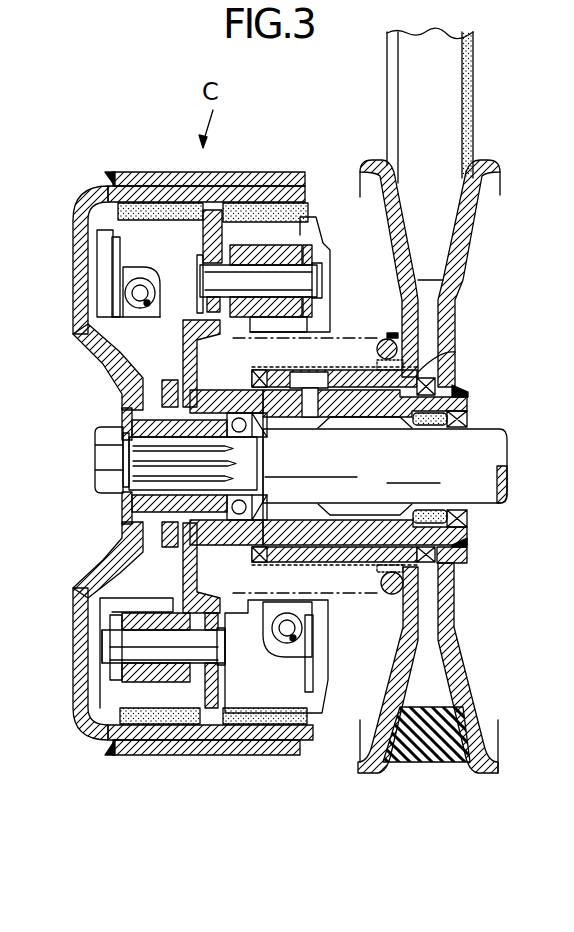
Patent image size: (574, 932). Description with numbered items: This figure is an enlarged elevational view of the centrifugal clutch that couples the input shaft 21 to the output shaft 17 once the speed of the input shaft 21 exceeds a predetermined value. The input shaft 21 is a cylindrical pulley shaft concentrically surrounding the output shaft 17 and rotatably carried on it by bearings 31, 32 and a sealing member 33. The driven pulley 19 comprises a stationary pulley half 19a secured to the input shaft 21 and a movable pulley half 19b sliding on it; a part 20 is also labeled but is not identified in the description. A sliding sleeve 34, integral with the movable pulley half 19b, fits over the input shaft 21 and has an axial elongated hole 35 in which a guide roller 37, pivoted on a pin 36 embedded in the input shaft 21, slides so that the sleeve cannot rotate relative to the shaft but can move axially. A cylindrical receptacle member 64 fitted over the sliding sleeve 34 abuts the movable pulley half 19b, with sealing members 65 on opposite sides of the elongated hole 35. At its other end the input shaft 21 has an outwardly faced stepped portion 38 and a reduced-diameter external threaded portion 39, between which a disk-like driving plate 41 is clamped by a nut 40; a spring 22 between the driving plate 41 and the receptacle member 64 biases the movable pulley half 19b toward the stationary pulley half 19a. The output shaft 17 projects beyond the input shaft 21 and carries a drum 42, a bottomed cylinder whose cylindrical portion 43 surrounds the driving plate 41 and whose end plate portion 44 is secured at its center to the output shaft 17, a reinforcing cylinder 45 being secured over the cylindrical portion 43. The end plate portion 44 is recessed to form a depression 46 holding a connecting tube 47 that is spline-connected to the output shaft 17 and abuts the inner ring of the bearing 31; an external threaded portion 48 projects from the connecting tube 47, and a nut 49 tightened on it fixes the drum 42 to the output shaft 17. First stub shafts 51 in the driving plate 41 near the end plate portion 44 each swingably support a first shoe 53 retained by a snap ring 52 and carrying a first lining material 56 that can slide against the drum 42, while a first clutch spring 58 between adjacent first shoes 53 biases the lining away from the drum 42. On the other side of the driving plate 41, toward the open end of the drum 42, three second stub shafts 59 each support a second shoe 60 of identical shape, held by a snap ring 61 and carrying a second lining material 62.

The output shaft 17 is at (412, 487).
The driven pulley 19 is at (451, 466).
The stationary pulley half 19a is at (447, 260).
The movable pulley half 19b is at (420, 285).
The wheel rim 20 is at (474, 88).
The input shaft 21 is at (370, 540).
The spring 22 is at (393, 585).
The bearing 31 is at (247, 466).
The bearing 32 is at (430, 426).
The sealing member 33 is at (466, 418).
The sliding sleeve 34 is at (450, 354).
The elongated hole 35 is at (365, 392).
The pin 36 is at (312, 417).
The guide roller 37 is at (236, 437).
The stepped portion 38 is at (194, 388).
The external threaded portion 39 is at (173, 375).
The nut 40 is at (168, 548).
The driving plate 41 is at (203, 248).
The drum 42 is at (18, 730).
The cylindrical portion 43 is at (130, 742).
The end plate portion 44 is at (78, 705).
The reinforcing cylinder 45 is at (220, 742).
The depression 46 is at (120, 392).
The connecting tube 47 is at (222, 512).
The external threaded portion 48 is at (95, 463).
The nut 49 is at (100, 490).
The first stub shaft 51 is at (105, 650).
The snap ring 52 is at (118, 628).
The first shoe 53 is at (107, 230).
The first lining material 56 is at (155, 212).
The first clutch spring 58 is at (148, 292).
The second stub shaft 59 is at (322, 284).
The second shoe 60 is at (317, 228).
The snap ring 61 is at (318, 262).
The second lining material 62 is at (258, 212).
The cylindrical receptacle member 64 is at (345, 386).
The sealing member 65 is at (283, 565).